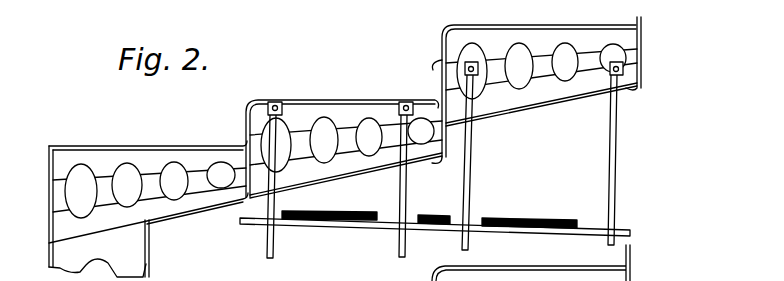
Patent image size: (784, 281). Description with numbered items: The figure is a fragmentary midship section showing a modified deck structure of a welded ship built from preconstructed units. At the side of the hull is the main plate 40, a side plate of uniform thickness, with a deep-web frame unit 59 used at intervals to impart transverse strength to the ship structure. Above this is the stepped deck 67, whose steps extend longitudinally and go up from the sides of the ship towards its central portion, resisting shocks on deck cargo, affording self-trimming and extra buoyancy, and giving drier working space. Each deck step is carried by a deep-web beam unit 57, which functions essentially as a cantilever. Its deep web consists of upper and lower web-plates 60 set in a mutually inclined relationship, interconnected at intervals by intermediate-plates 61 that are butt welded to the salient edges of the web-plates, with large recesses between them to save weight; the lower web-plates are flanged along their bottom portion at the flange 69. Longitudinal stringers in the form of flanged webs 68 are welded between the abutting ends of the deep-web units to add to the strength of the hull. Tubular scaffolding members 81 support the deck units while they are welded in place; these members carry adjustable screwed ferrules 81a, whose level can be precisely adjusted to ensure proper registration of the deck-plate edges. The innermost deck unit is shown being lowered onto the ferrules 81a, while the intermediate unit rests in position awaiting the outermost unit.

The main plate 40 is at (49, 247).
The deep-web beam unit 57 is at (203, 212).
The deep-web frame unit 59 is at (155, 265).
The web-plate 60 is at (149, 183).
The intermediate-plate 61 is at (100, 183).
The stepped deck 67 is at (313, 87).
The flanged web 68 is at (277, 191).
The flange 69 is at (360, 175).
The tubular scaffolding member 81 is at (268, 248).
The adjustable screwed ferrule 81a is at (466, 69).